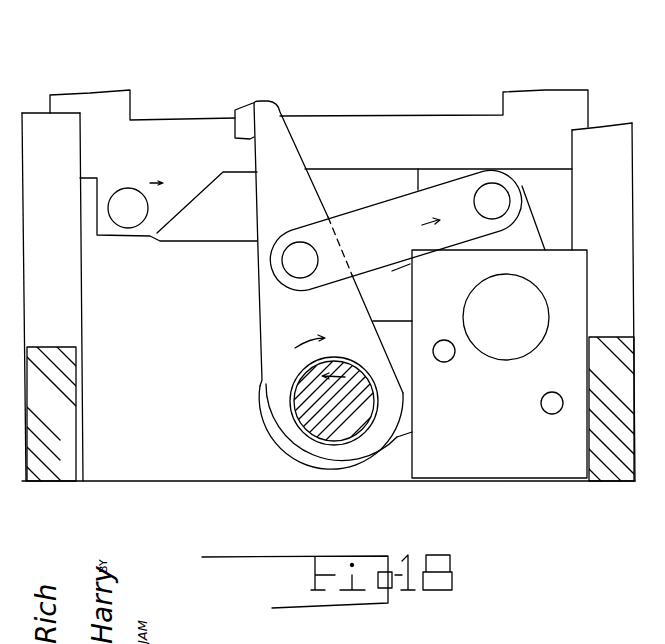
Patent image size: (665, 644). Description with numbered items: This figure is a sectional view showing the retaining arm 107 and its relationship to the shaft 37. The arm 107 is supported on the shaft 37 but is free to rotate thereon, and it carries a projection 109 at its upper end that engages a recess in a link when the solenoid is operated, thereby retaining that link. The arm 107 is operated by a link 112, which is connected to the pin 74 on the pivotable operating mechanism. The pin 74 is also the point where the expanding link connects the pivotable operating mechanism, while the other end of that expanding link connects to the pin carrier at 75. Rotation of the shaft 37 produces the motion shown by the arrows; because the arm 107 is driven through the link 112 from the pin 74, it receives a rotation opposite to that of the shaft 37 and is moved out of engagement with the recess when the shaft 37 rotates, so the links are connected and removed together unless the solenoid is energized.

The shaft 37 is at (308, 413).
The pin 74 is at (505, 203).
The connection point on pin carrier 75 is at (126, 228).
The retaining arm 107 is at (283, 116).
The projection 109 is at (250, 102).
The link 112 is at (388, 210).